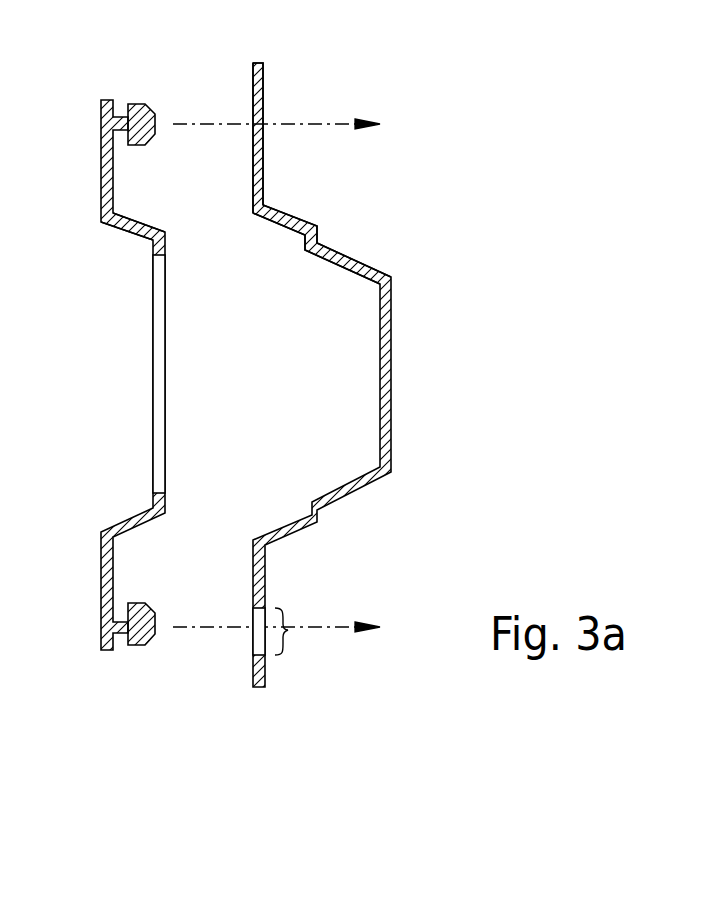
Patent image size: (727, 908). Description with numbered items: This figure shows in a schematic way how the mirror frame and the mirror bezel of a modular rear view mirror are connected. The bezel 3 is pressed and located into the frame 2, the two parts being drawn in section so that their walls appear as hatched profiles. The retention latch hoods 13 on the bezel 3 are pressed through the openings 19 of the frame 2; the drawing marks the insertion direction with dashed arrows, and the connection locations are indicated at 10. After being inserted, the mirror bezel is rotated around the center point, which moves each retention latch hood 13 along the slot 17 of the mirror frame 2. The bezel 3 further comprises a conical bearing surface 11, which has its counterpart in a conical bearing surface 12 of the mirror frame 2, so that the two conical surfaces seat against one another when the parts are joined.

The mirror frame 2 is at (385, 303).
The mirror bezel 3 is at (100, 570).
The connection points 10 is at (121, 100).
The conical bearing surface 11 is at (128, 228).
The conical bearing surface 12 is at (298, 226).
The retention latch hood 13 is at (147, 107).
The slot 17 is at (260, 137).
The opening 19 is at (288, 630).